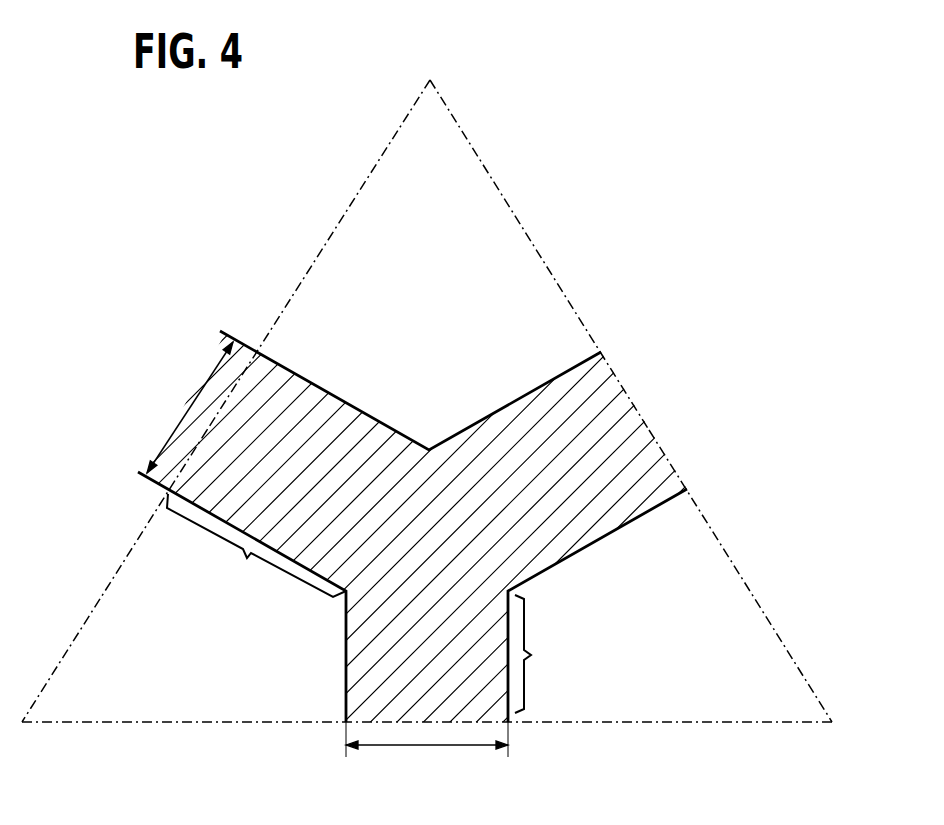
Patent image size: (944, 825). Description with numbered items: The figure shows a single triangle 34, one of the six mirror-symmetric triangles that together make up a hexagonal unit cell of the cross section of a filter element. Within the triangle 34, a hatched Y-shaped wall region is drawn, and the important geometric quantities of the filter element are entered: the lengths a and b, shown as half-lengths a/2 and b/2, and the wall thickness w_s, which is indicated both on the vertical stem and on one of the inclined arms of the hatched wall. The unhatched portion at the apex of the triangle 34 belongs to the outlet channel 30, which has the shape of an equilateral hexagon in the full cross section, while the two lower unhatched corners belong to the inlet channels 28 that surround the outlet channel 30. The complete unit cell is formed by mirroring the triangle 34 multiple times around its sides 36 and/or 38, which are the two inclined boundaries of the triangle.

The inlet channels 28 is at (125, 592).
The outlet channel 30 is at (427, 401).
The triangle 34 is at (717, 328).
The side 36 is at (562, 292).
The side 38 is at (294, 293).